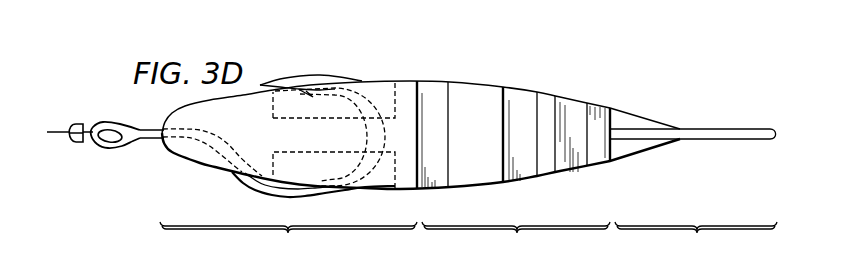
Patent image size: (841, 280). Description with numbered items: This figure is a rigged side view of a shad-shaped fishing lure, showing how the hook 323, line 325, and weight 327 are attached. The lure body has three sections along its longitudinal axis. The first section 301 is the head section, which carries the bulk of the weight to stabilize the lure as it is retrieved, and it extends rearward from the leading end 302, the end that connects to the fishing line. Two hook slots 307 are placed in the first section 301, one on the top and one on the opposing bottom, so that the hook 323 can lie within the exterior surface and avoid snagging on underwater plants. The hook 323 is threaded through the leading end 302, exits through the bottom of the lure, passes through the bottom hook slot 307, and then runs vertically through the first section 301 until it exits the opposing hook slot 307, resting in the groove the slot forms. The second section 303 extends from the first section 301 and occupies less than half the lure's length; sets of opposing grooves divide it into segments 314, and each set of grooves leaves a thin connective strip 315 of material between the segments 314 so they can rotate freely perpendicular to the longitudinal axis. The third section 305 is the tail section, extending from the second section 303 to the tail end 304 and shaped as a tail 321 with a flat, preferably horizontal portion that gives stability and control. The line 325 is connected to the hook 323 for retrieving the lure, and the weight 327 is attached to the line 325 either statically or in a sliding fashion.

The first section 301 is at (288, 239).
The leading end 302 is at (163, 146).
The second section 303 is at (516, 239).
The tail end 304 is at (771, 130).
The third section 305 is at (696, 240).
The hook slots 307 is at (394, 100).
The segments 314 is at (477, 82).
The connective strip 315 is at (433, 88).
The tail 321 is at (728, 141).
The hook 323 is at (246, 185).
The line 325 is at (63, 140).
The weight 327 is at (77, 123).